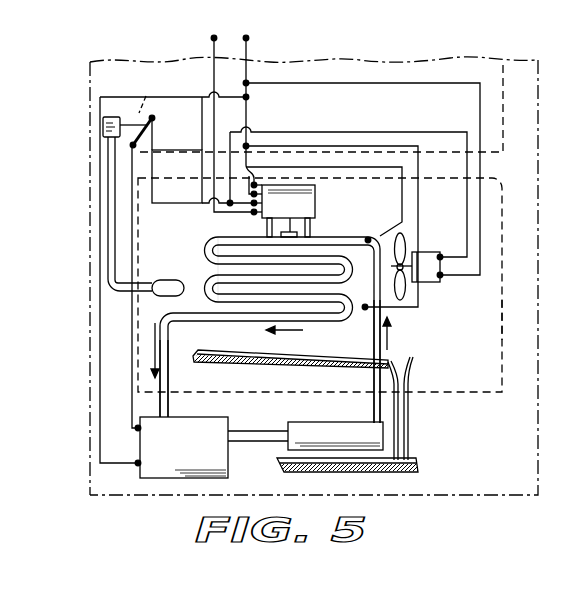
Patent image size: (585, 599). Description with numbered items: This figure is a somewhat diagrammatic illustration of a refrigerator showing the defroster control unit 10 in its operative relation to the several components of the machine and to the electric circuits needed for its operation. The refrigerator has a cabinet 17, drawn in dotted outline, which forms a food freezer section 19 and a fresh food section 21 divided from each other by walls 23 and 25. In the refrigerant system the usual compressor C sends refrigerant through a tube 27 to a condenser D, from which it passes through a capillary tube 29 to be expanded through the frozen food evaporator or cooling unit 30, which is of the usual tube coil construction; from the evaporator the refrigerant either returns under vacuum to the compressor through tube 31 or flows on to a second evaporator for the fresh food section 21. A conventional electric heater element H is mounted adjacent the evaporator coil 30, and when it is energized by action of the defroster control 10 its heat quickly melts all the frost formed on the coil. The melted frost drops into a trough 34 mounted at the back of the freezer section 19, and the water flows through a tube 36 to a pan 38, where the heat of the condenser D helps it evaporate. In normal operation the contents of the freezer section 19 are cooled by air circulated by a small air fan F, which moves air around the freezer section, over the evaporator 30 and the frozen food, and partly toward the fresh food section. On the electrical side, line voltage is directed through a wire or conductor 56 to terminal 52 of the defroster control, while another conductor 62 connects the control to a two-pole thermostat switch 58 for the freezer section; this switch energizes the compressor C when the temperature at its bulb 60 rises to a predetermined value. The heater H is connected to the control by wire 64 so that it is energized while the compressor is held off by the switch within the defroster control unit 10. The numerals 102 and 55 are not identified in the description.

The conductor 56 is at (213, 46).
The fresh food section 21 is at (412, 66).
The supply conductor 102 is at (182, 96).
The two-pole thermostat switch 58 is at (105, 117).
The compressor terminal lead 55 is at (254, 184).
The wire 64 is at (348, 166).
The wall 25 is at (473, 152).
The conductor 62 is at (192, 199).
The terminal 52 is at (257, 213).
The defroster control unit 10 is at (315, 200).
The wall 23 is at (503, 200).
The food freezer section 19 is at (491, 327).
The electric heater element H is at (210, 265).
The bulb 60 is at (178, 282).
The air fan F is at (432, 252).
The trough 34 is at (232, 350).
The evaporator 30 is at (328, 320).
The capillary tube 29 is at (373, 380).
The cabinet 17 is at (538, 460).
The tube 31 is at (168, 402).
The tube 27 is at (262, 436).
The compressor C is at (170, 442).
The condenser D is at (328, 430).
The tube 36 is at (400, 418).
The pan 38 is at (385, 473).